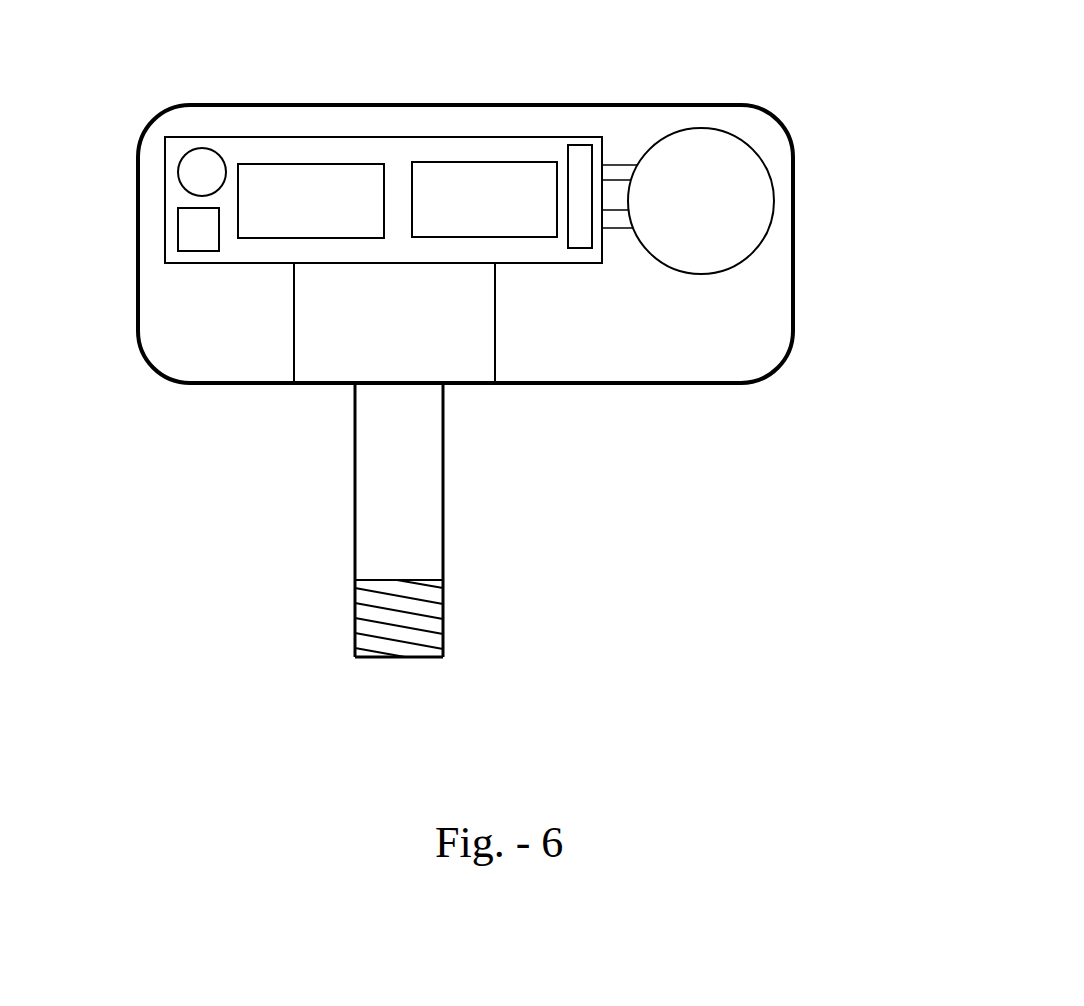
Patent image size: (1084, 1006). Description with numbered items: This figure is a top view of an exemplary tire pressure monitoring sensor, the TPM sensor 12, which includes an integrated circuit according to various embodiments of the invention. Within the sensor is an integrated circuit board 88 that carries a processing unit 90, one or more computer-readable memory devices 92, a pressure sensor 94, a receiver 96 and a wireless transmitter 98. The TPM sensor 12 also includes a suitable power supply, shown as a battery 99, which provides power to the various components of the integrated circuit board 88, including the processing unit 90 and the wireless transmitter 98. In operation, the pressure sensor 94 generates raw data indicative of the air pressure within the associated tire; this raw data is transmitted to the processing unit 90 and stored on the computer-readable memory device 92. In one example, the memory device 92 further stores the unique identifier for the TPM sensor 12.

The TPM sensor 12 is at (812, 128).
The integrated circuit board 88 is at (452, 147).
The processing unit 90 is at (313, 196).
The computer-readable memory device 92 is at (512, 188).
The pressure sensor 94 is at (203, 172).
The receiver 96 is at (190, 230).
The wireless transmitter 98 is at (583, 193).
The battery 99 is at (717, 215).